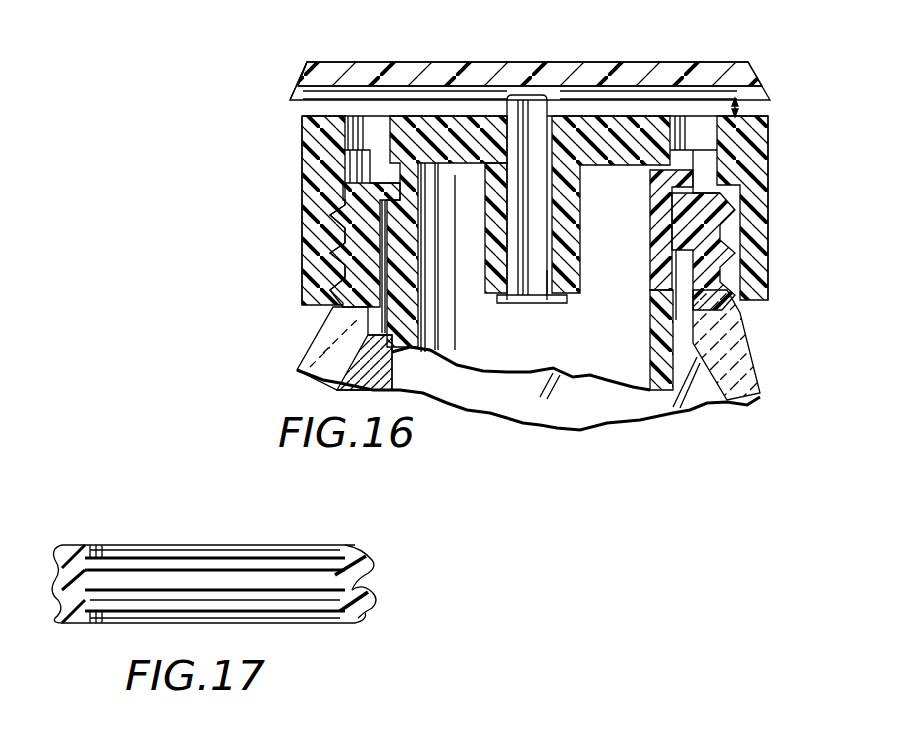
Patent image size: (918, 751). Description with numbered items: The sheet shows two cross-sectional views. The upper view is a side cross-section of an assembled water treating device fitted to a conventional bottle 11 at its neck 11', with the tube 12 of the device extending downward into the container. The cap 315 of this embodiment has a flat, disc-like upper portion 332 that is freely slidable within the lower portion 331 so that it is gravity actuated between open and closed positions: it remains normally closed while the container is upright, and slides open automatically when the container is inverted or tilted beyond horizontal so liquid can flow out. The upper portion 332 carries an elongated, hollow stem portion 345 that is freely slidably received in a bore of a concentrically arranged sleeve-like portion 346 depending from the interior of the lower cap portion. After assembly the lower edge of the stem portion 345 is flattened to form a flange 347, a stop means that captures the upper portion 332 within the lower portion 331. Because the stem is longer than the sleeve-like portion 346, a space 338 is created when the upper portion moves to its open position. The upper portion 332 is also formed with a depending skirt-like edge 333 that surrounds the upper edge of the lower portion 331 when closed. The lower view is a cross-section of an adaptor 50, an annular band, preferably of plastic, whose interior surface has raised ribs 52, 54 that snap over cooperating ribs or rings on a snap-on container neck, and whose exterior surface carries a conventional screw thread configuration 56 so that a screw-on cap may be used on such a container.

In FIG. 16, the cap 315 is at (705, 34).
In FIG. 16, the skirt-like edge 333 is at (297, 80).
In FIG. 16, the upper portion 332 is at (450, 68).
In FIG. 16, the space 338 is at (738, 107).
In FIG. 16, the lower portion 331 is at (310, 126).
In FIG. 16, the stem portion 345 is at (553, 238).
In FIG. 16, the sleeve-like portion 346 is at (565, 272).
In FIG. 16, the flange 347 is at (550, 303).
In FIG. 16, the tube 12 is at (650, 361).
In FIG. 16, the neck 11' is at (738, 345).
In FIG. 16, the bottle 11 is at (544, 368).
In FIG. 17, the adaptor 50 is at (137, 545).
In FIG. 17, the raised rib 52 is at (330, 556).
In FIG. 17, the raised rib 54 is at (336, 612).
In FIG. 17, the screw thread configuration 56 is at (378, 578).